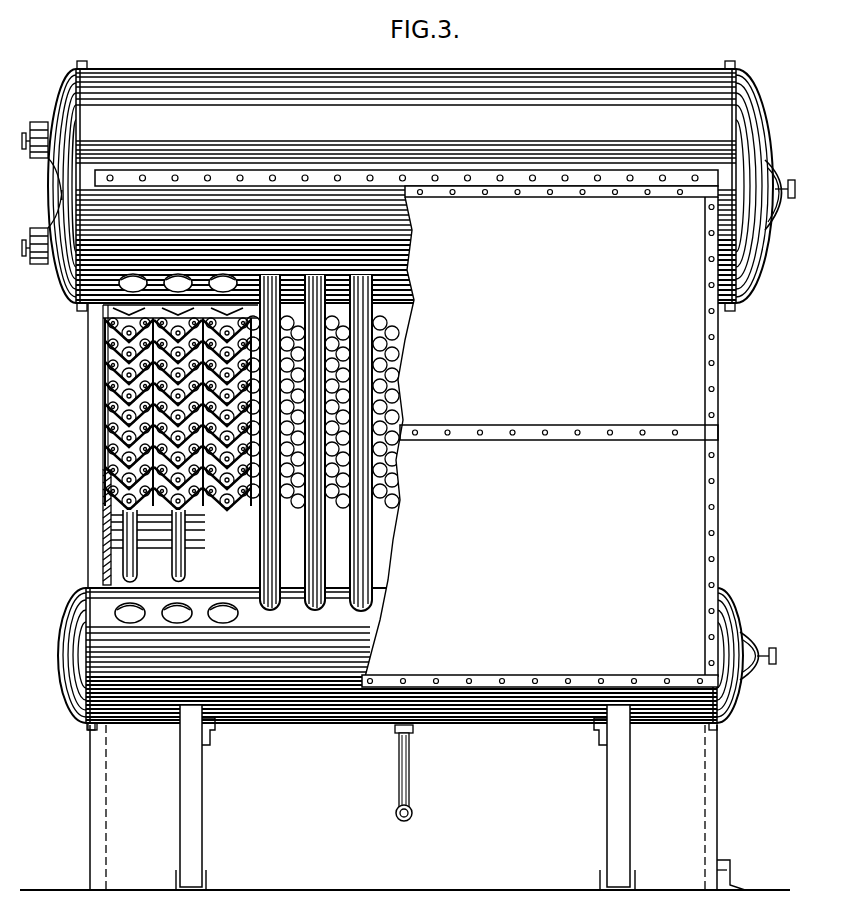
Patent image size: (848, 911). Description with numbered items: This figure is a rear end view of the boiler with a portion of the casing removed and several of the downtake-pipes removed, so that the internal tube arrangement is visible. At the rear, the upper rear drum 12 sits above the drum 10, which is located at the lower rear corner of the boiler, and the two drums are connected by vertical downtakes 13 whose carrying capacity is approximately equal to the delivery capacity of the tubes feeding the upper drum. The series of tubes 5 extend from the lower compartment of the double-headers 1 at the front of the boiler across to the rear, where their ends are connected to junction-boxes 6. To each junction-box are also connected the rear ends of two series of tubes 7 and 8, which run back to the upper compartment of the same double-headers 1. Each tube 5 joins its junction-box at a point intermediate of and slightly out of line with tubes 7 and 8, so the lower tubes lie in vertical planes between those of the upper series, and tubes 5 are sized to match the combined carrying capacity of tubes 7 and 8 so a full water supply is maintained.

The double-headers 1 is at (154, 527).
The tubes 5 is at (110, 336).
The junction-boxes 6 is at (105, 441).
The tubes 7 is at (106, 323).
The tubes 8 is at (438, 322).
The drum 10 is at (67, 679).
The upper rear drum 12 is at (408, 186).
The downtakes 13 is at (267, 547).